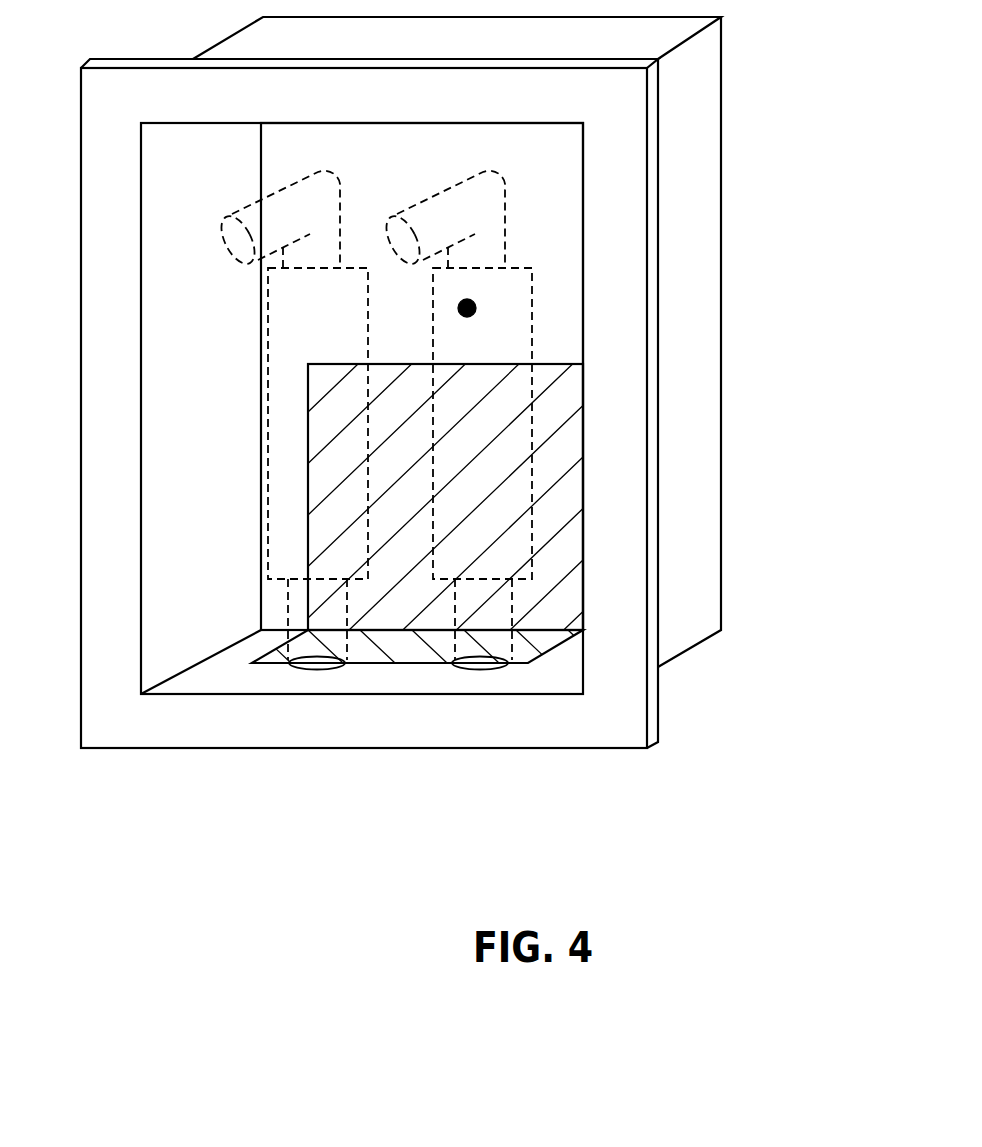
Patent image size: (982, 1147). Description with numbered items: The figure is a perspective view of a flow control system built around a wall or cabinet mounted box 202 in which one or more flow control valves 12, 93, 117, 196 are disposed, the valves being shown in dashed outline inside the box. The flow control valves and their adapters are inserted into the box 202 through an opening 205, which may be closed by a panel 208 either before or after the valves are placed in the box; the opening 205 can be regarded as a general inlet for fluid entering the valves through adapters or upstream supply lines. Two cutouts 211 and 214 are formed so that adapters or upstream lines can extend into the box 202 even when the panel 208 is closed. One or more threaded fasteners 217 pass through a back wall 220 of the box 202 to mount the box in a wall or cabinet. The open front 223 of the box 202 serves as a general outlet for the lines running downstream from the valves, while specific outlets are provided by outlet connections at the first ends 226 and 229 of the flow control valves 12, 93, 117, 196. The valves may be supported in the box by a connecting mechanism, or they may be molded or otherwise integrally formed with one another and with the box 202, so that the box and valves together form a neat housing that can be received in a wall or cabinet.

The box 202 is at (764, 80).
The opening 205 is at (560, 365).
The panel 208 is at (563, 505).
The cutout 211 is at (328, 668).
The cutout 214 is at (488, 668).
The threaded fastener 217 is at (467, 308).
The back wall 220 is at (560, 192).
The open front 223 is at (170, 590).
The first end 226 is at (347, 277).
The first end 229 is at (519, 277).
The flow control valve 12 is at (564, 452).
The flow control valve 93 is at (564, 452).
The flow control valve 117 is at (564, 452).
The flow control valve 196 is at (348, 348).